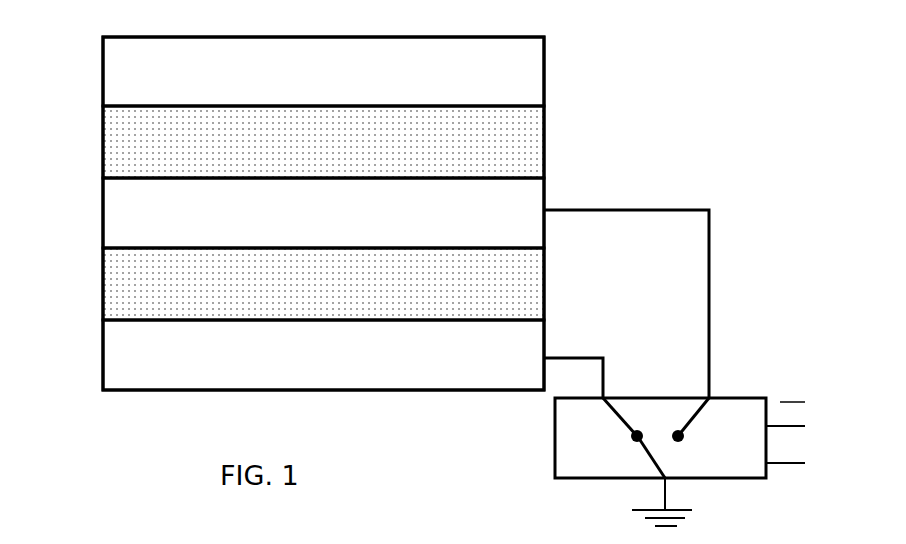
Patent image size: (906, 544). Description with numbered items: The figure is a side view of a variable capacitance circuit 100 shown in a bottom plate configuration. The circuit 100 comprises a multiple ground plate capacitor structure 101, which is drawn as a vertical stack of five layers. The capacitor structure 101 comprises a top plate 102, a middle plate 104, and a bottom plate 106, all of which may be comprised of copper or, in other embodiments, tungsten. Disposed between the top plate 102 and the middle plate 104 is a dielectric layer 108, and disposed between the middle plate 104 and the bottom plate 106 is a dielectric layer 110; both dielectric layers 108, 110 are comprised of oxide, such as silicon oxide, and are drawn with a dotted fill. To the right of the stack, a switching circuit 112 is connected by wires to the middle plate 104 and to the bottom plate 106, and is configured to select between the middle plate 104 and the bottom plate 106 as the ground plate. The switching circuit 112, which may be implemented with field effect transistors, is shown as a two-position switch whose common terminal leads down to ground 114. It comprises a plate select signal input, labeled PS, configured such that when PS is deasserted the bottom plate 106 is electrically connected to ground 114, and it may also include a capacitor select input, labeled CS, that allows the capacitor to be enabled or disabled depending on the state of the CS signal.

The variable capacitance circuit 100 is at (716, 53).
The multiple ground plate capacitor structure 101 is at (553, 86).
The top plate 102 is at (118, 66).
The middle plate 104 is at (118, 215).
The bottom plate 106 is at (127, 354).
The dielectric layer 108 is at (127, 148).
The dielectric layer 110 is at (133, 293).
The switching circuit 112 is at (562, 450).
The ground 114 is at (665, 492).